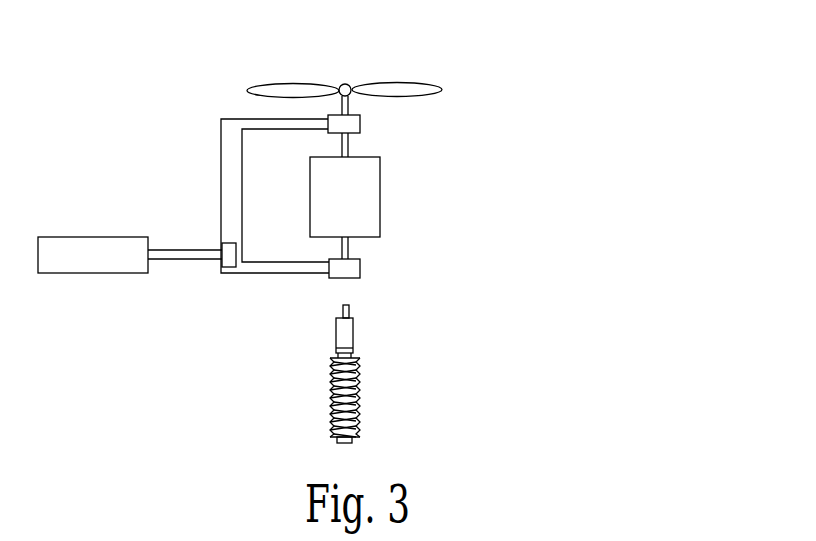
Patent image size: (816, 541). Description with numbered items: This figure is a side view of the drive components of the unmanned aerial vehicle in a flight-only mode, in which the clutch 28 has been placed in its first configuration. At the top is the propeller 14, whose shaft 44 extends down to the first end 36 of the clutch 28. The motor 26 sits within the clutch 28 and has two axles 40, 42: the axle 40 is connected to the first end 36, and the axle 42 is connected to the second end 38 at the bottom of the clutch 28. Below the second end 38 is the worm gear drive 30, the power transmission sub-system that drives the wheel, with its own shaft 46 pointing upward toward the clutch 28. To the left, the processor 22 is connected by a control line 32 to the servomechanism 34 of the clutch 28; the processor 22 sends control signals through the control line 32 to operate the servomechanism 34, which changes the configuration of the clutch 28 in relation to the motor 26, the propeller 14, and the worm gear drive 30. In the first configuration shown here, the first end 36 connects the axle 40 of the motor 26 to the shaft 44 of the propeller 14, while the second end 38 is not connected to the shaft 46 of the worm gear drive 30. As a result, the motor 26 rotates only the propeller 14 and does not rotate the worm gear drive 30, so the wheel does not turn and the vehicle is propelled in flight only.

The propeller 14 is at (410, 82).
The processor 22 is at (73, 276).
The motor 26 is at (381, 193).
The clutch 28 is at (220, 165).
The worm gear drive 30 is at (361, 388).
The control line 32 is at (187, 260).
The servomechanism 34 is at (226, 273).
The first end 36 is at (362, 125).
The second end 38 is at (361, 268).
The axle 40 is at (339, 141).
The axle 42 is at (339, 252).
The shaft 44 is at (350, 102).
The shaft 46 is at (354, 335).